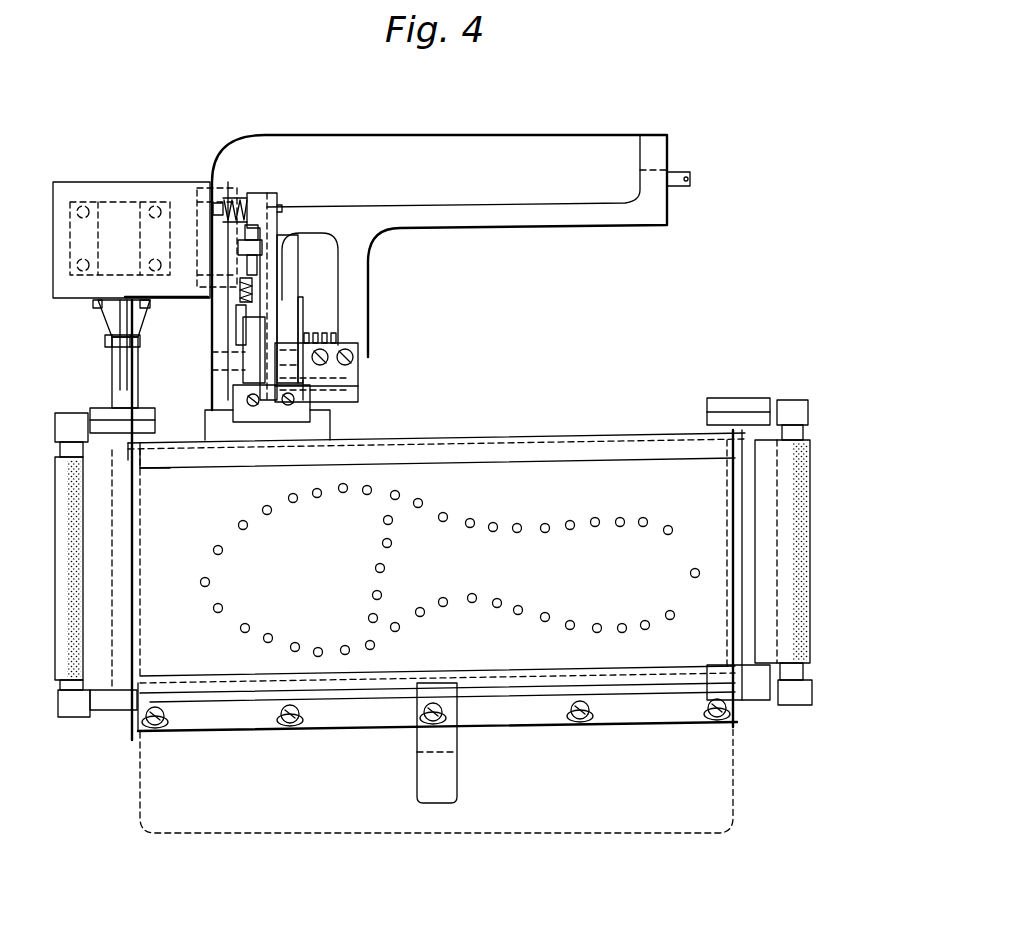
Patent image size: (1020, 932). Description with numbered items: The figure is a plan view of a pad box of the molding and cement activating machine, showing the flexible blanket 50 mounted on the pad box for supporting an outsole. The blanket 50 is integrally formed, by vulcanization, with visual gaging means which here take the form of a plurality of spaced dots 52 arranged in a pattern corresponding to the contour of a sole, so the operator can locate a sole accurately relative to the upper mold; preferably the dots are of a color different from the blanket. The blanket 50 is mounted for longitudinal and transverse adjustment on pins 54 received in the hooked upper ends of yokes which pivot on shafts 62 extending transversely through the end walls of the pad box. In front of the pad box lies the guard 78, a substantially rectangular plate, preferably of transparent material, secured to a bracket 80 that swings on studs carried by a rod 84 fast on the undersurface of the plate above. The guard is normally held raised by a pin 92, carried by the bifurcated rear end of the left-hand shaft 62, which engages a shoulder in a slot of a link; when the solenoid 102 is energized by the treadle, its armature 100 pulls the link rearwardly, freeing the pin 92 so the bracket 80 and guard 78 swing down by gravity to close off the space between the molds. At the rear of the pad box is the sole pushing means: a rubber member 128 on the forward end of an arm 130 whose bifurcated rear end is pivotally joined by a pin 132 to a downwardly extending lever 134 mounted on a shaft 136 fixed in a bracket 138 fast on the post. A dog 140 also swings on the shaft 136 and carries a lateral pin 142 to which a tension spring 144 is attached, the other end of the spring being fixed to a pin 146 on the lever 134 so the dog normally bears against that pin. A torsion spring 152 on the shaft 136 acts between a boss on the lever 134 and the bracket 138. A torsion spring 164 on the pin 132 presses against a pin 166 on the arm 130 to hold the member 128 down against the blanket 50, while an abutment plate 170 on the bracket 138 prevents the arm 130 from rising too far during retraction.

The flexible blanket 50 is at (538, 458).
The spaced dots 52 is at (383, 520).
The pins 54 is at (72, 412).
The shafts 62 is at (142, 550).
The guard 78 is at (550, 830).
The bracket 80 is at (352, 726).
The rod 84 is at (176, 472).
The pin 92 is at (142, 341).
The armature 100 is at (105, 290).
The solenoid 102 is at (118, 195).
The member 128 is at (310, 418).
The arm 130 is at (283, 268).
The pin 132 is at (280, 207).
The lever 134 is at (290, 285).
The shaft 136 is at (225, 375).
The bracket 138 is at (550, 150).
The dog 140 is at (243, 366).
The pin 142 is at (243, 328).
The tension spring 144 is at (242, 292).
The pin 146 is at (247, 265).
The torsion spring 152 is at (330, 338).
The torsion spring 164 is at (235, 198).
The pin 166 is at (238, 246).
The abutment plate 170 is at (352, 390).